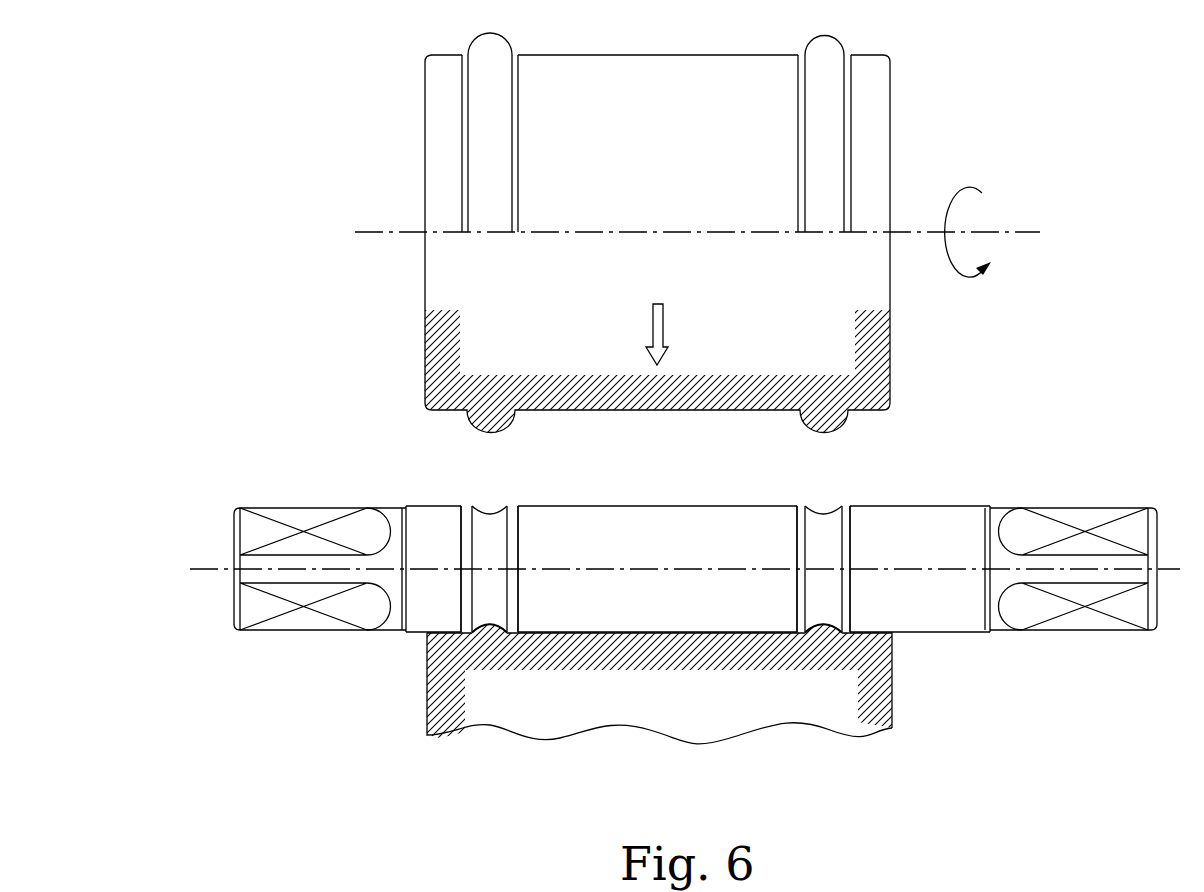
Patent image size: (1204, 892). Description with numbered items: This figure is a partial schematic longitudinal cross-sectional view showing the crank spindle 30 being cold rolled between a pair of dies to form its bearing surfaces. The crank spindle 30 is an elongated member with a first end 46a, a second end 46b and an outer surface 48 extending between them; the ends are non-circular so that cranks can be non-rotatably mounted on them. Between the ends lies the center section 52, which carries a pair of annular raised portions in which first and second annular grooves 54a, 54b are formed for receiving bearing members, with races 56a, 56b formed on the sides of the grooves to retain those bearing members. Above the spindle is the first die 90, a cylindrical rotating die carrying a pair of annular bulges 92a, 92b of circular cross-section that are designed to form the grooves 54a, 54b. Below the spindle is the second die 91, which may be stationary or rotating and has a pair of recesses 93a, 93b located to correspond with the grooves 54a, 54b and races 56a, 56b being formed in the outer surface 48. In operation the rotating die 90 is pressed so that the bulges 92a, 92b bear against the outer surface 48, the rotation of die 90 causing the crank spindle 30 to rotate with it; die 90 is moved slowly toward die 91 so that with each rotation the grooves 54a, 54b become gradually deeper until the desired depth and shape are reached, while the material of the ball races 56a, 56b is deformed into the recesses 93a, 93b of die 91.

The crank spindle 30 is at (685, 575).
The first end 46a is at (293, 505).
The second end 46b is at (1072, 508).
The outer surface 48 is at (932, 501).
The center section 52 is at (638, 520).
The first annular groove 54a is at (494, 542).
The second annular groove 54b is at (823, 548).
The first race 56a is at (517, 612).
The second race 56b is at (847, 614).
The first die 90 is at (659, 236).
The second die 91 is at (723, 710).
The first annular bulge 92a is at (475, 425).
The second annular bulge 92b is at (840, 420).
The first recess 93a is at (490, 636).
The second recess 93b is at (826, 636).